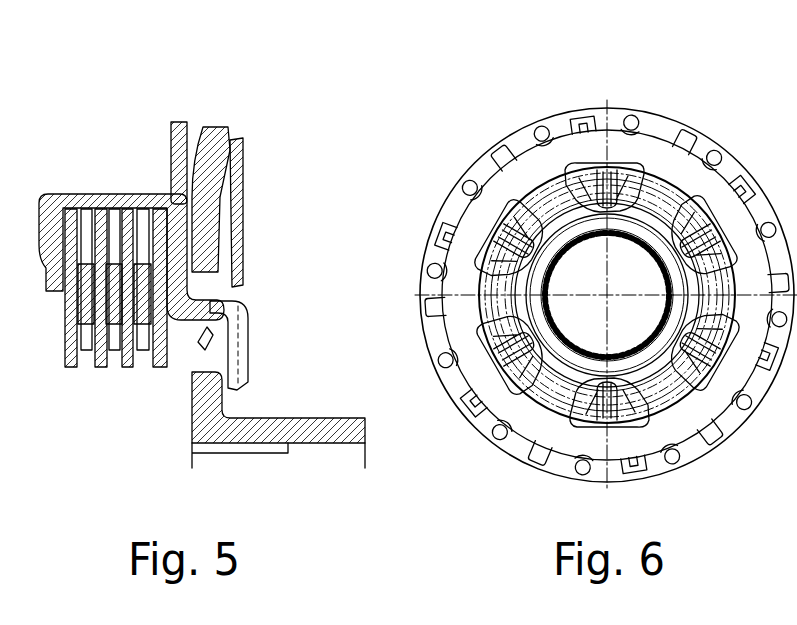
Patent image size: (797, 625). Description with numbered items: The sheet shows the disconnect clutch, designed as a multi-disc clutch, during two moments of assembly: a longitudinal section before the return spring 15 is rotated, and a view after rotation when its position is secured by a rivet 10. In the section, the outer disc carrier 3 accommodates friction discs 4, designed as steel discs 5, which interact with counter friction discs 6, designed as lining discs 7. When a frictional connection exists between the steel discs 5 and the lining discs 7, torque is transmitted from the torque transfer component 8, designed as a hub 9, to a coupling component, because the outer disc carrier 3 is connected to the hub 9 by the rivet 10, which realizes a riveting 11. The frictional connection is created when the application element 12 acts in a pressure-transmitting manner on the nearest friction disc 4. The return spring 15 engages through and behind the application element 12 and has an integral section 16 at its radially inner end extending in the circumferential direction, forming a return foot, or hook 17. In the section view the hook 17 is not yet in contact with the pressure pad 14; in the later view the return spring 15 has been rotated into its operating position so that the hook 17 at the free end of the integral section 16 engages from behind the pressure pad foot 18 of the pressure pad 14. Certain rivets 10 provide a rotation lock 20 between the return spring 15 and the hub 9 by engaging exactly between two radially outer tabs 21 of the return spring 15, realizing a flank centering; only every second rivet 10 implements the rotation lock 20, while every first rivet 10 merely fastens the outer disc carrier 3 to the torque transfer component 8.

In FIG. 5, the outer disc carrier 3 is at (97, 200).
In FIG. 5, the friction discs 4 is at (96, 329).
In FIG. 5, the steel discs 5 is at (73, 360).
In FIG. 5, the counter friction discs 6 is at (114, 329).
In FIG. 5, the lining discs 7 is at (118, 352).
In FIG. 5, the torque transfer component 8 is at (229, 427).
In FIG. 6, the torque transfer component 8 is at (576, 362).
In FIG. 5, the hub 9 is at (200, 435).
In FIG. 6, the hub 9 is at (570, 352).
In FIG. 6, the rivet 10 is at (547, 255).
In FIG. 6, the riveting 11 is at (547, 255).
In FIG. 5, the application element 12 is at (142, 157).
In FIG. 5, the pressure pad 14 is at (177, 233).
In FIG. 6, the pressure pad 14 is at (624, 244).
In FIG. 5, the return spring 15 is at (238, 165).
In FIG. 6, the return spring 15 is at (627, 166).
In FIG. 5, the integral section 16 is at (268, 314).
In FIG. 6, the integral section 16 is at (587, 170).
In FIG. 5, the hook 17 is at (213, 333).
In FIG. 6, the hook 17 is at (591, 168).
In FIG. 5, the pressure pad foot 18 is at (240, 353).
In FIG. 6, the pressure pad foot 18 is at (623, 182).
In FIG. 6, the rotation lock 20 is at (543, 120).
In FIG. 6, the radially outer tabs 21 is at (527, 130).